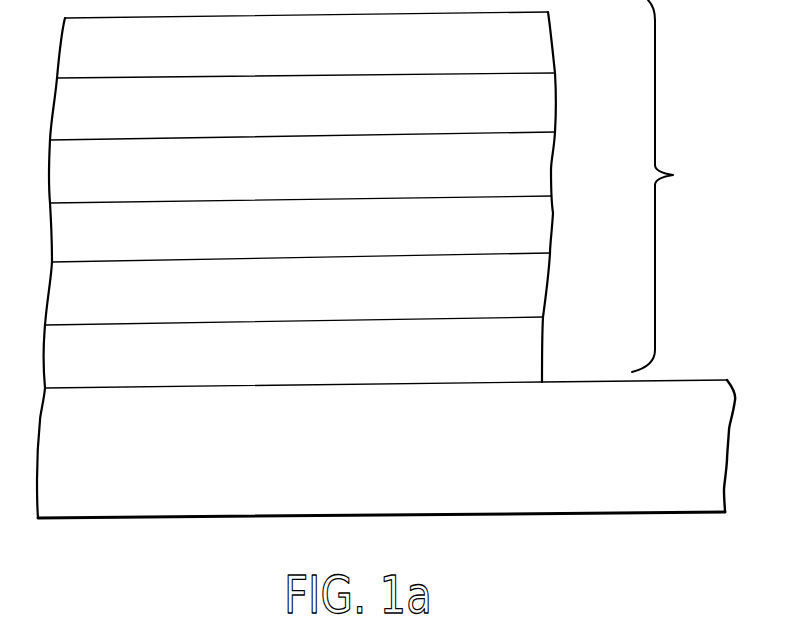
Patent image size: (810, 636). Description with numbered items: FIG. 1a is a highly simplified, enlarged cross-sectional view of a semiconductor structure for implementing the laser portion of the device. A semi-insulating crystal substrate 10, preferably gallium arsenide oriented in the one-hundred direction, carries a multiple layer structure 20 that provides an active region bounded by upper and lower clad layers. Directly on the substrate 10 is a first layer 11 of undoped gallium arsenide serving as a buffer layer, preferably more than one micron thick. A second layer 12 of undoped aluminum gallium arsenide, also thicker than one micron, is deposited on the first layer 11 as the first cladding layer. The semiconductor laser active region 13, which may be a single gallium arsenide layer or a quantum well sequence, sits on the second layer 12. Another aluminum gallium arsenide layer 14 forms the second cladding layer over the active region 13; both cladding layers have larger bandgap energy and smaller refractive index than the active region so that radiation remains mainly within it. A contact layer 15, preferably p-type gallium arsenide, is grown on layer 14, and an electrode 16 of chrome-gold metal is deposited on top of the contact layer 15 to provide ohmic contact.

The substrate 10 is at (460, 460).
The first layer 11 is at (527, 345).
The second layer 12 is at (535, 287).
The semiconductor laser active region 13 is at (540, 232).
The second cladding layer 14 is at (540, 172).
The contact layer 15 is at (543, 108).
The electrode 16 is at (538, 48).
The multiple layer structure 20 is at (673, 186).